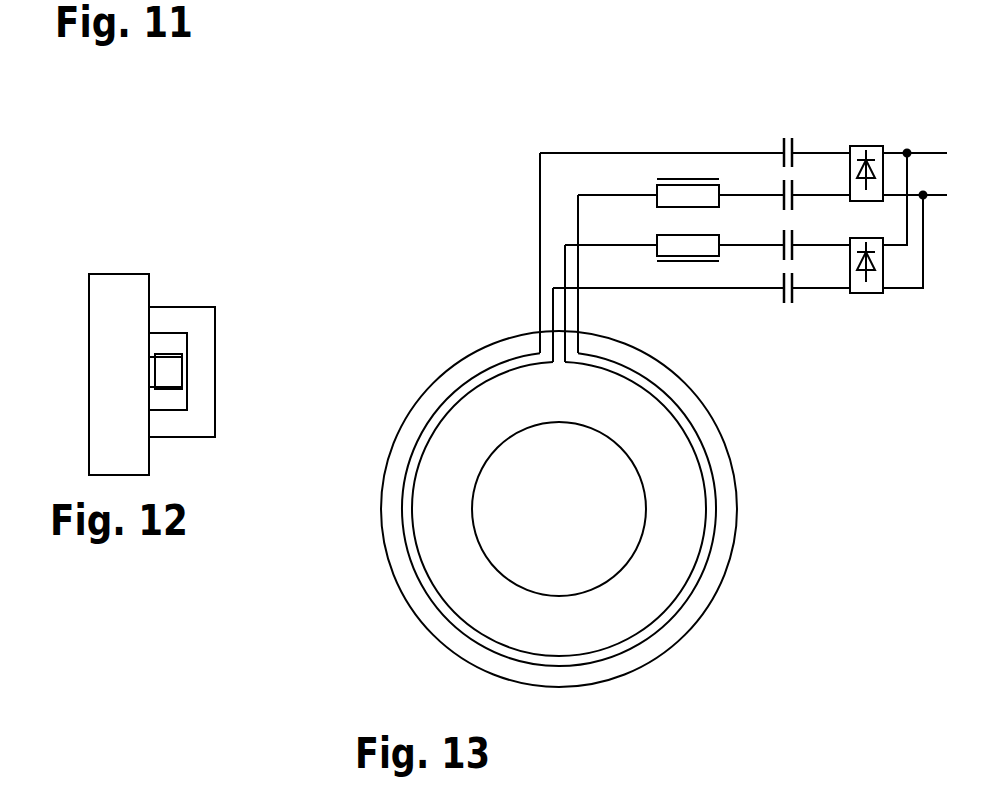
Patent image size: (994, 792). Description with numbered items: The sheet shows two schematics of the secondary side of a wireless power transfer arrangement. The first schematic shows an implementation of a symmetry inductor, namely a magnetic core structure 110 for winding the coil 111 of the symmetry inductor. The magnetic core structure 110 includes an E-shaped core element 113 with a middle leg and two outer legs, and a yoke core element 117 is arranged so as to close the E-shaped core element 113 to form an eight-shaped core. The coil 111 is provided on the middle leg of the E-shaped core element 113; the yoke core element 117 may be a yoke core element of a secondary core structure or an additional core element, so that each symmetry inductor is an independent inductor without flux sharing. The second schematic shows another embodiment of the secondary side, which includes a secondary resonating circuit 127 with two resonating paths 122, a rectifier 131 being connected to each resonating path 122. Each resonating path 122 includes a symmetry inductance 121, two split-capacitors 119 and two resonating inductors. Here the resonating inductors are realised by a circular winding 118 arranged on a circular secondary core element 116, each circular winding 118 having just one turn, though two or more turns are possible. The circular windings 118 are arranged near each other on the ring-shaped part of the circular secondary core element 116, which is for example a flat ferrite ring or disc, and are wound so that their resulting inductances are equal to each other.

In FIG. 12, the magnetic core structure 110 is at (96, 250).
In FIG. 12, the coil 111 is at (182, 370).
In FIG. 12, the E-shaped core element 113 is at (215, 313).
In FIG. 12, the yoke core element 117 is at (119, 374).
In FIG. 13, the circular secondary core element 116 is at (455, 380).
In FIG. 13, the circular winding 118 is at (705, 455).
In FIG. 13, the split-capacitor 119 is at (790, 119).
In FIG. 13, the symmetry inductance 121 is at (690, 119).
In FIG. 13, the resonating path 122 is at (504, 170).
In FIG. 13, the secondary resonating circuit 127 is at (579, 121).
In FIG. 13, the rectifier 131 is at (870, 117).